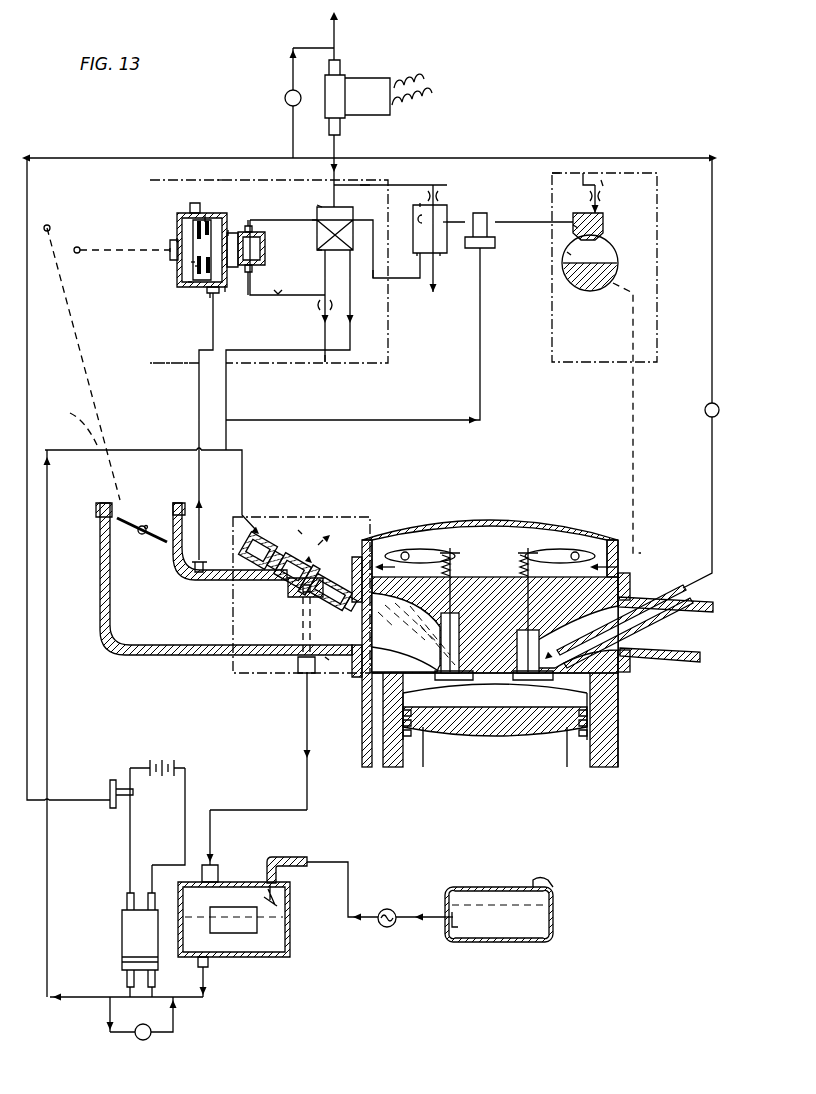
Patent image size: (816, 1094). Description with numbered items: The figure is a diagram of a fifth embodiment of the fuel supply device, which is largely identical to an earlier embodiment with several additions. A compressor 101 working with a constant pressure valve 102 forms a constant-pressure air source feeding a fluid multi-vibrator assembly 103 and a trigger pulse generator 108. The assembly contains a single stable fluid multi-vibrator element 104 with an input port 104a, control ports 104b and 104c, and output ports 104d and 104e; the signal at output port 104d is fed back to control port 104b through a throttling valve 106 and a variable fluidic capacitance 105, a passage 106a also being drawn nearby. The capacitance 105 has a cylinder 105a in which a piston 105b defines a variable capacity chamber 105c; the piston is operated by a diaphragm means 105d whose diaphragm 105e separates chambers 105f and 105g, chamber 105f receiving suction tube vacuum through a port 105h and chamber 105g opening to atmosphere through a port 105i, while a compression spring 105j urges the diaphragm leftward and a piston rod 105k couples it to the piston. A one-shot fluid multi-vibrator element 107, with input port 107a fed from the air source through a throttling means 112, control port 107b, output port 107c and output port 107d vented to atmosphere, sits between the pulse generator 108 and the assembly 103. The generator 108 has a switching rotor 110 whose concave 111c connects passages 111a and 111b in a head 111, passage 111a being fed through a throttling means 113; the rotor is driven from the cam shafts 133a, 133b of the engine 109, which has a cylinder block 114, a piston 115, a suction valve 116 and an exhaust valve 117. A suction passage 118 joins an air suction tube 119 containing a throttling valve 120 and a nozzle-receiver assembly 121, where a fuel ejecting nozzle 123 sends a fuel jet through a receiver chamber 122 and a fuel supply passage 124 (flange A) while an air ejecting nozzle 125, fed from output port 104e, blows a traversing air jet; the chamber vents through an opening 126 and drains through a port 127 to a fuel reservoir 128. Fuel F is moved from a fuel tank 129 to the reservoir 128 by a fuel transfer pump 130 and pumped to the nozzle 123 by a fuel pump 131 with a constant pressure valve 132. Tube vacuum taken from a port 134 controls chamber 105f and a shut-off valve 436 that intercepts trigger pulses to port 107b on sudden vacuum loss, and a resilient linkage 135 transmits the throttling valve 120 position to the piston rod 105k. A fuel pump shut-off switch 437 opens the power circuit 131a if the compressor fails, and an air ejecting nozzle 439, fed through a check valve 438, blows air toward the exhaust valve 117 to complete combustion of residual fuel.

The compressor 101 is at (378, 95).
The constant pressure valve 102 is at (285, 97).
The fluid multi-vibrator assembly 103 is at (220, 179).
The single stable type fluid multi-vibrator element 104 is at (347, 207).
The input port 104a is at (317, 205).
The control port 104b is at (317, 220).
The control port 104c is at (365, 185).
The output port 104d is at (320, 250).
The output port 104e is at (378, 318).
The variable fluidic capacitance 105 is at (187, 213).
The cylinder 105a is at (233, 297).
The piston 105b is at (230, 233).
The variable capacity chamber 105c is at (263, 233).
The diaphragm means 105d is at (190, 283).
The diaphragm 105e is at (197, 267).
The diaphragm chamber 105f is at (208, 222).
The diaphragm chamber 105g is at (193, 263).
The port 105h is at (211, 298).
The port 105i is at (170, 250).
The compression spring 105j is at (227, 290).
The piston rod 105k is at (177, 240).
The throttling valve 106 is at (320, 310).
The passage 106a is at (327, 362).
The one-shot type fluid multi-vibrator element 107 is at (448, 213).
The input port 107a is at (422, 205).
The control port 107b is at (447, 222).
The output port 107c is at (420, 255).
The output port 107d is at (442, 255).
The trigger pulse generator 108 is at (573, 173).
The engine 109 is at (447, 522).
The switching rotor 110 is at (615, 247).
The head 111 is at (605, 222).
The passage 111a is at (595, 185).
The passage 111b is at (573, 227).
The concave 111c is at (568, 253).
The throttling means 112 is at (440, 192).
The throttling means 113 is at (603, 182).
The cylinder block 114 is at (613, 675).
The piston 115 is at (573, 712).
The suction valve 116 is at (462, 625).
The exhaust valve 117 is at (507, 577).
The suction passage 118 is at (328, 660).
The air suction tube 119 is at (115, 647).
The throttling valve 120 is at (117, 530).
The nozzle-receiver assembly 121 is at (283, 537).
The receiver chamber 122 is at (305, 540).
The fuel ejecting nozzle 123 is at (300, 530).
The flange A is at (330, 537).
The fuel supply passage 124 is at (352, 560).
The air ejecting nozzle 125 is at (290, 593).
The opening 126 is at (326, 535).
The port 127 is at (290, 598).
The fuel reservoir 128 is at (227, 960).
The fuel tank 129 is at (472, 942).
The fuel transfer pump 130 is at (385, 928).
The fuel pump 131 is at (122, 933).
The power circuit 131a is at (166, 758).
The constant pressure valve 132 is at (147, 1040).
The cam shaft 133a is at (380, 553).
The cam shaft 133b is at (623, 553).
The port 134 is at (194, 560).
The resilient linkage 135 is at (66, 424).
The shut-off valve 436 is at (487, 213).
The fuel pump shut-off switch 437 is at (110, 795).
The check valve 438 is at (705, 412).
The air ejecting nozzle 439 is at (637, 625).
The fuel F is at (540, 917).